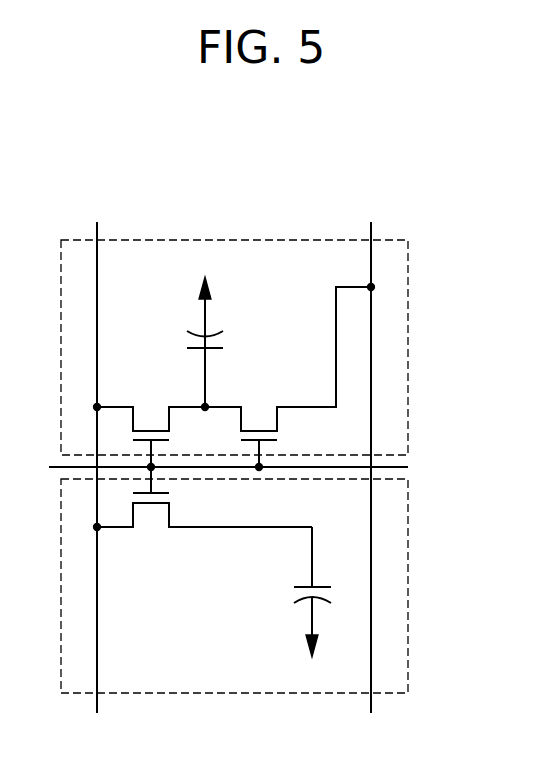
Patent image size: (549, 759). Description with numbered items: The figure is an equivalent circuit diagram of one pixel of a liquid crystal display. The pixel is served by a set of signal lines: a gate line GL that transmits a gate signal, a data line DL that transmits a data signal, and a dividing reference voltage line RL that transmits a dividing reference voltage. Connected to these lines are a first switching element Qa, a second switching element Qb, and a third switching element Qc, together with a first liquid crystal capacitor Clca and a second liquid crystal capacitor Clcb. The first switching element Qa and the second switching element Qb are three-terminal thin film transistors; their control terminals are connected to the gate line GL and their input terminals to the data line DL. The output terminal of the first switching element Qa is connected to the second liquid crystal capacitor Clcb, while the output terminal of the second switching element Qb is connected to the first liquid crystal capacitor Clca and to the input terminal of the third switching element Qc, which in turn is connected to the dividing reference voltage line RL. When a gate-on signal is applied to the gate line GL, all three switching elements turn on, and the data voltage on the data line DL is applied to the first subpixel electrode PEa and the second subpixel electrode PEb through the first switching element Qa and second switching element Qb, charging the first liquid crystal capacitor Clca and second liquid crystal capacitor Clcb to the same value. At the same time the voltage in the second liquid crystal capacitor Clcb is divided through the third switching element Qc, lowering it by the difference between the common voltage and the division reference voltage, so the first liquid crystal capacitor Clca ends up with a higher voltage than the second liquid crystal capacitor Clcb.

The data line DL is at (99, 455).
The dividing reference voltage line RL is at (371, 455).
The gate line GL is at (213, 467).
The first switching element Qa is at (203, 510).
The second switching element Qb is at (150, 426).
The third switching element Qc is at (288, 377).
The first liquid crystal capacitor Clca is at (234, 342).
The second liquid crystal capacitor Clcb is at (283, 592).
The first subpixel electrode PEa is at (408, 587).
The second subpixel electrode PEb is at (408, 347).